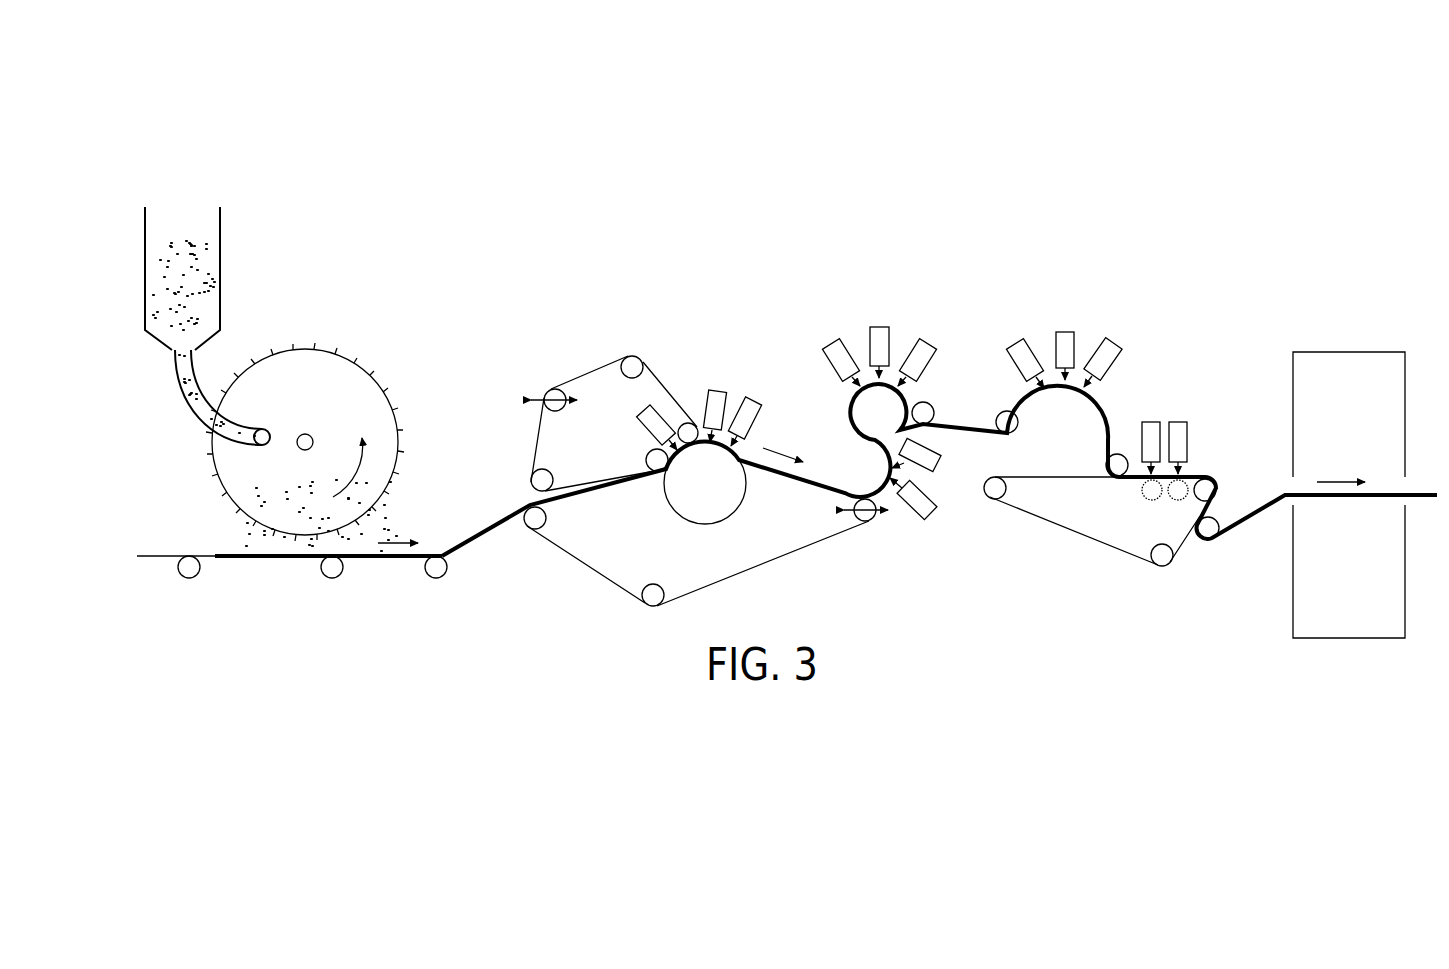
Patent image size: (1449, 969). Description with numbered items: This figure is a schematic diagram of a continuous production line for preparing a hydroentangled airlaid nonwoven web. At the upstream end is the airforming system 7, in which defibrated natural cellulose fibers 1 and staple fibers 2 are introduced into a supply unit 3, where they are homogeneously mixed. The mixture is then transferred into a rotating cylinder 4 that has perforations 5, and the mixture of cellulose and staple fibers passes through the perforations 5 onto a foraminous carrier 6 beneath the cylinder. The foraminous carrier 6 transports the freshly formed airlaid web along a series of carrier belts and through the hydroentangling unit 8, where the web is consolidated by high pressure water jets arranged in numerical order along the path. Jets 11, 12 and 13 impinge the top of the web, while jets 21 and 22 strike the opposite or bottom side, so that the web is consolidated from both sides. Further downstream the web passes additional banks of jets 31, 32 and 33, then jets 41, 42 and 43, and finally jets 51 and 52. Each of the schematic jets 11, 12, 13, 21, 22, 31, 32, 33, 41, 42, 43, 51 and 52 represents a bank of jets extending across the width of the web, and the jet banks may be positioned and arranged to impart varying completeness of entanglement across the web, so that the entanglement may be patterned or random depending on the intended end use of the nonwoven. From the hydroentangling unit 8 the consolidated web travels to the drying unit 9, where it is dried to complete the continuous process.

The defibrated natural cellulose fibers 1 is at (165, 225).
The staple fibers 2 is at (200, 225).
The supply unit 3 is at (210, 268).
The rotating cylinder 4 is at (342, 396).
The perforations 5 is at (398, 412).
The foraminous carrier 6 is at (258, 558).
The airforming system 7 is at (316, 310).
The hydroentangling unit 8 is at (754, 288).
The drying unit 9 is at (1348, 352).
The jet 11 is at (640, 425).
The jet 12 is at (716, 388).
The jet 13 is at (750, 400).
The jet 21 is at (930, 516).
The jet 22 is at (940, 450).
The jet 31 is at (834, 340).
The jet 32 is at (879, 327).
The jet 33 is at (920, 340).
The jet 41 is at (1022, 340).
The jet 42 is at (1065, 332).
The jet 43 is at (1108, 340).
The jet 51 is at (1150, 422).
The jet 52 is at (1180, 422).